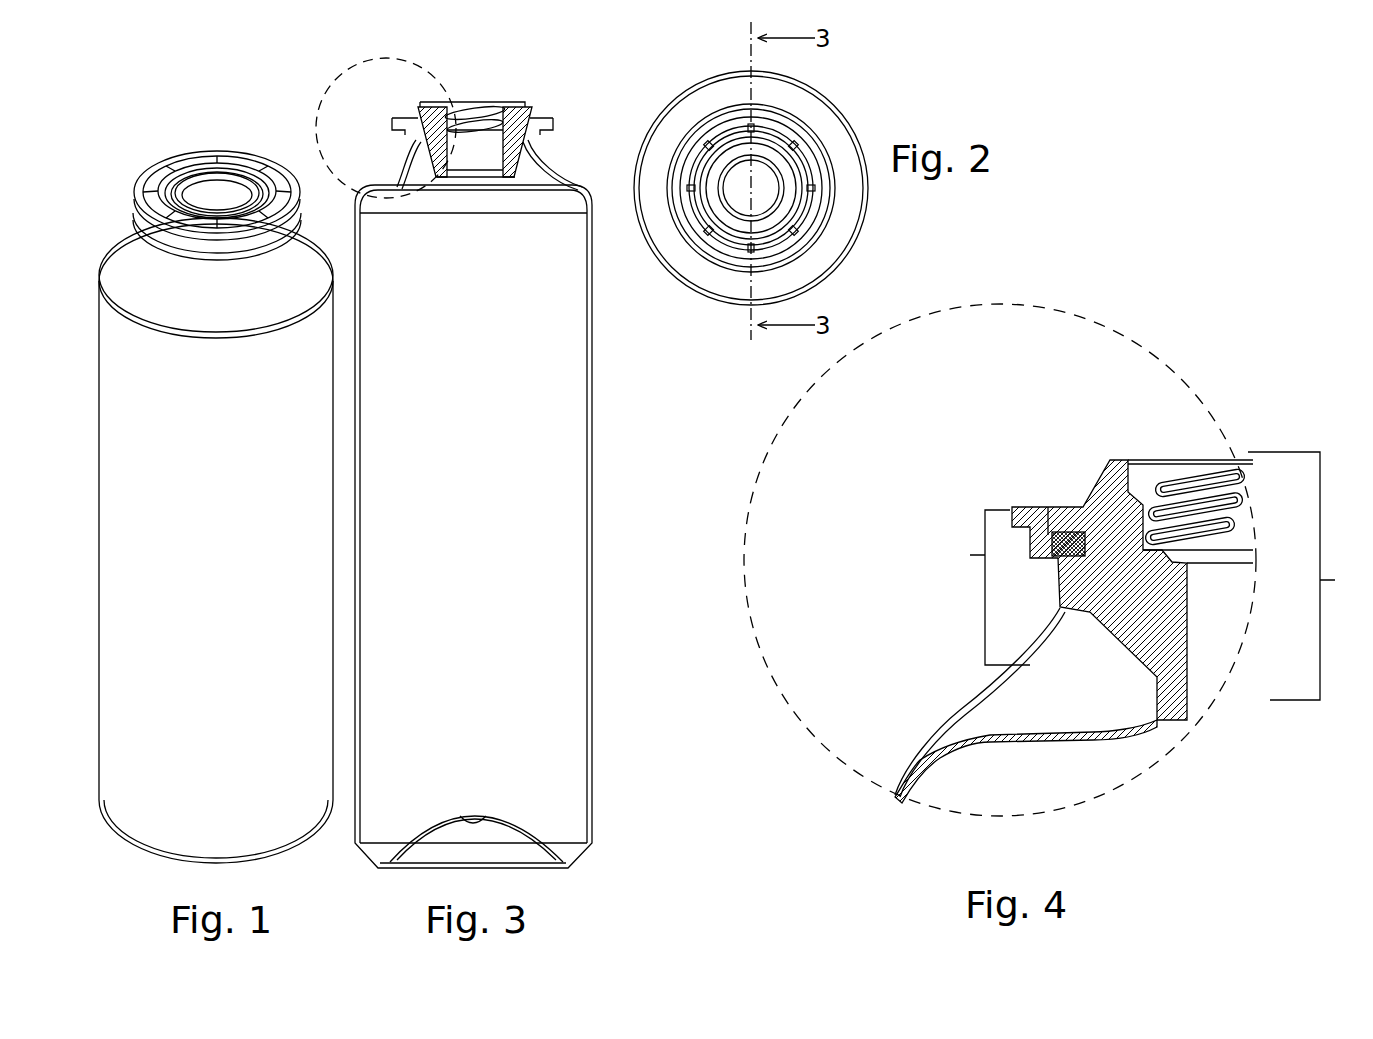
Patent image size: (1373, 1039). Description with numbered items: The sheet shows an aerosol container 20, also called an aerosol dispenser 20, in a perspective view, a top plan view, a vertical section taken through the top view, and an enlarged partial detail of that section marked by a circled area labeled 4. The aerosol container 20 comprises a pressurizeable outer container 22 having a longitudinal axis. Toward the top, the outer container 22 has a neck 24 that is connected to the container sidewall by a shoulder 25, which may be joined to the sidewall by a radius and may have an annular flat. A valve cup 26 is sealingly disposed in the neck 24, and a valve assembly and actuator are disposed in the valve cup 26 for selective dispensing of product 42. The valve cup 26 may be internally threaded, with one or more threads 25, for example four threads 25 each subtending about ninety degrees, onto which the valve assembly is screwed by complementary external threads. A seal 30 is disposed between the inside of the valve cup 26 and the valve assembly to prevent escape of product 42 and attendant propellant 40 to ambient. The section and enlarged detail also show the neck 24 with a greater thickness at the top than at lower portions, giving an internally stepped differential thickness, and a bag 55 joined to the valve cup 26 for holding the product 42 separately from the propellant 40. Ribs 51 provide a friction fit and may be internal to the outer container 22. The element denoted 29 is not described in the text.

In FIG. 1, the aerosol container 20 is at (78, 125).
In FIG. 3, the aerosol container 20 is at (580, 878).
In FIG. 2, the aerosol container 20 is at (898, 92).
In FIG. 4, the aerosol container 20 is at (1180, 845).
In FIG. 1, the outer container 22 is at (198, 427).
In FIG. 3, the outer container 22 is at (594, 293).
In FIG. 2, the outer container 22 is at (670, 101).
In FIG. 4, the outer container 22 is at (1010, 655).
In FIG. 3, the neck 24 is at (440, 192).
In FIG. 4, the neck 24 is at (1153, 576).
In FIG. 1, the threads 25 is at (246, 307).
In FIG. 3, the threads 25 is at (497, 125).
In FIG. 4, the threads 25 is at (1172, 482).
In FIG. 1, the valve cup 26 is at (162, 168).
In FIG. 3, the valve cup 26 is at (425, 118).
In FIG. 2, the valve cup 26 is at (730, 133).
In FIG. 4, the valve cup 26 is at (1085, 505).
In FIG. 3, the neck transition 29 is at (530, 142).
In FIG. 3, the seal 30 is at (463, 140).
In FIG. 4, the seal 30 is at (1200, 548).
In FIG. 3, the propellant 40 is at (556, 182).
In FIG. 4, the propellant 40 is at (1099, 590).
In FIG. 3, the product 42 is at (476, 660).
In FIG. 4, the product 42 is at (1026, 761).
In FIG. 3, the ribs 51 is at (418, 165).
In FIG. 4, the ribs 51 is at (1125, 632).
In FIG. 3, the bag 55 is at (588, 342).
In FIG. 4, the bag 55 is at (990, 742).
In FIG. 3, the detail circle of Fig. 4 is at (330, 80).